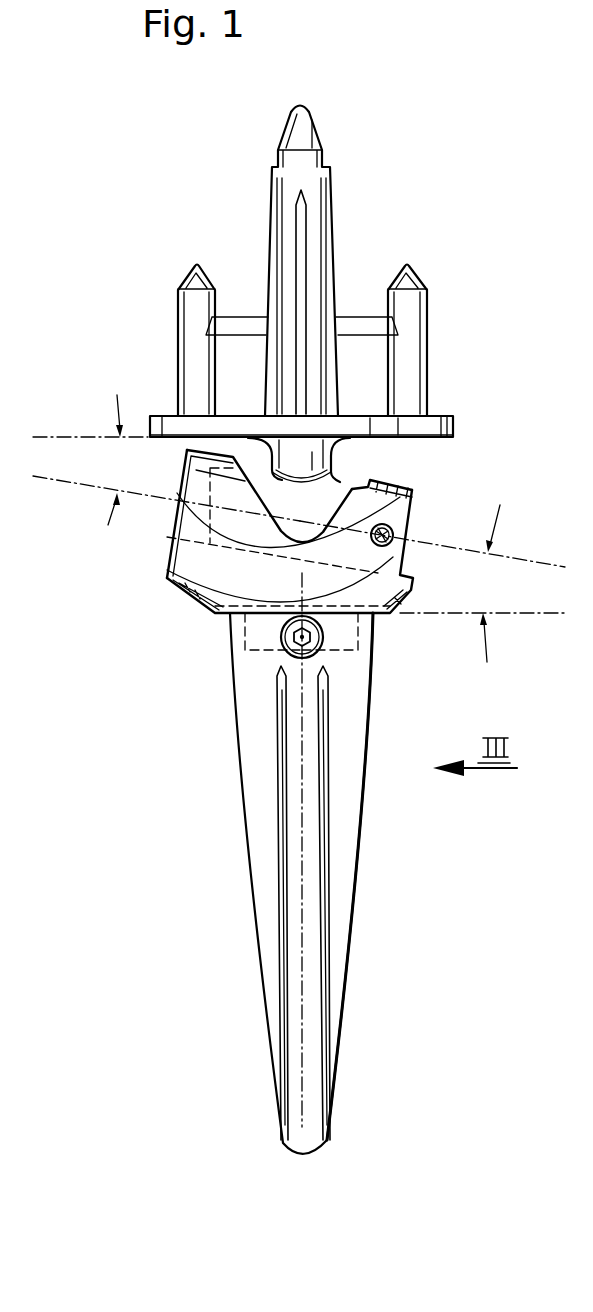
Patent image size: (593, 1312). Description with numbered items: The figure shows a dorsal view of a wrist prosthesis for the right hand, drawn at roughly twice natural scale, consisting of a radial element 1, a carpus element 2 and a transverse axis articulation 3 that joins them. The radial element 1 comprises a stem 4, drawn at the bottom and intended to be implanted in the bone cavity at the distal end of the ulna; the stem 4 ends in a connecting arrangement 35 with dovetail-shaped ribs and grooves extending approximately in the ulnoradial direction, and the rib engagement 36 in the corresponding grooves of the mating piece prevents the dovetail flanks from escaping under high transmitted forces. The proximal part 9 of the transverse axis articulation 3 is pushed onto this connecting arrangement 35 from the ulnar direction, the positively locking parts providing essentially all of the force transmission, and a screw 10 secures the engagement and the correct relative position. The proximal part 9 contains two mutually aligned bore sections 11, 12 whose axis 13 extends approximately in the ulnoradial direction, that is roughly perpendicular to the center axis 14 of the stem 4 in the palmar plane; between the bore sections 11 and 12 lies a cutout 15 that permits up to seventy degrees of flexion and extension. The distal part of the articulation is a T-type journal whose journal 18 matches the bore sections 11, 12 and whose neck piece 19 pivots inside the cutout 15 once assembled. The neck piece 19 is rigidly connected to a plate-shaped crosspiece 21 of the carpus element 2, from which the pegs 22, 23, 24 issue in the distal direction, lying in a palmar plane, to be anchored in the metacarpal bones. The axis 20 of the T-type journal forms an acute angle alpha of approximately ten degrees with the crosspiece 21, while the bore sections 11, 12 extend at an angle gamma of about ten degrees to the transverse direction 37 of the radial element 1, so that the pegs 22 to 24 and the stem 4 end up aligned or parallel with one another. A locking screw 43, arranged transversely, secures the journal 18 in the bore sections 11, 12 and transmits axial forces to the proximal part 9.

The radial element 1 is at (215, 801).
The carpus element 2 is at (205, 209).
The transverse axis articulation 3 is at (117, 594).
The stem 4 is at (268, 947).
The proximal part of the transverse axis articulation 9 is at (177, 600).
The screw 10 is at (287, 640).
The bore section 11 is at (168, 539).
The bore section 12 is at (388, 559).
The axis of the bore sections 13 is at (532, 560).
The center axis of the stem 14 is at (300, 713).
The cutout 15 is at (376, 486).
The journal 18 is at (288, 527).
The neck piece 19 is at (317, 467).
The axis of the T-type journal 20 is at (80, 487).
The crosspiece 21 is at (439, 421).
The peg 22 is at (192, 303).
The peg 23 is at (296, 138).
The peg 24 is at (407, 303).
The connecting arrangement 35 is at (222, 634).
The rib engagement 36 is at (380, 629).
The transverse direction of the radial element 37 is at (518, 614).
The locking screw 43 is at (392, 528).